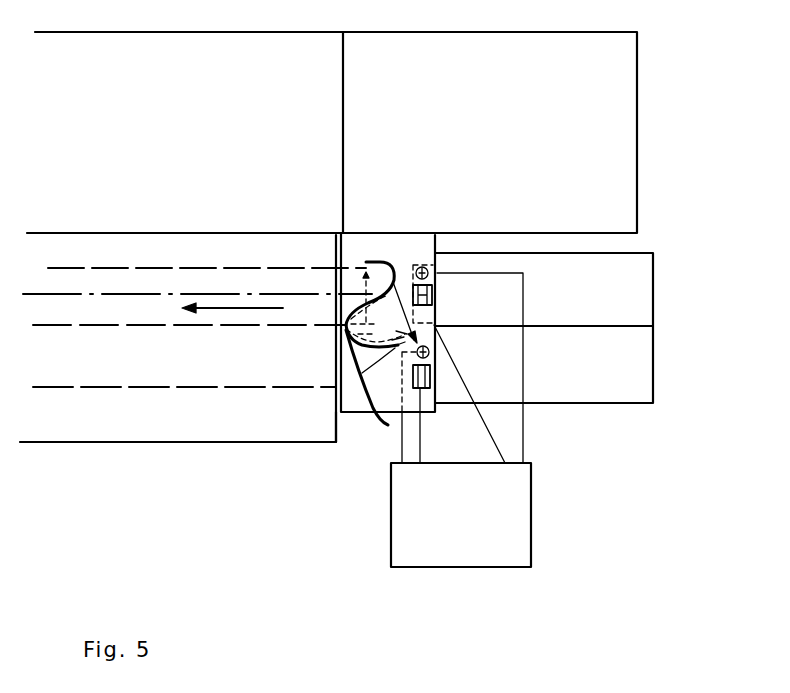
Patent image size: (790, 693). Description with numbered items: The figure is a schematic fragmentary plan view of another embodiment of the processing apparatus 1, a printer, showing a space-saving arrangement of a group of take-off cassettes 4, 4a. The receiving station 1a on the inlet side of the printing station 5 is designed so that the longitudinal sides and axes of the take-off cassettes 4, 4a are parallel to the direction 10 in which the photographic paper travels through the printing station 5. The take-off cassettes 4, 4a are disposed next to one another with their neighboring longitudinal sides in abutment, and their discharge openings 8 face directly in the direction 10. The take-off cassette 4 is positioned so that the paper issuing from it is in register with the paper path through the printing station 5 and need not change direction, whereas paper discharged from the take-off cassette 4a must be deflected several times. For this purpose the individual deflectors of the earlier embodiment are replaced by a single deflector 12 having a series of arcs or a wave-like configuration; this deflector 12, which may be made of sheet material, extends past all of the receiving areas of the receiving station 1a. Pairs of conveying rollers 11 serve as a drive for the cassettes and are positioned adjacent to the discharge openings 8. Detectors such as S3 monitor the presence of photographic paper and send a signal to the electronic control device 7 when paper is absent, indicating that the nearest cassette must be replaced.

The apparatus 1 is at (263, 442).
The receiving station 1a is at (340, 414).
The take-off cassette 4 is at (650, 309).
The take-off cassette 4a is at (637, 340).
The printing station 5 is at (147, 358).
The electronic control device 7 is at (518, 557).
The discharge opening 8 is at (437, 234).
The direction 10 is at (270, 308).
The conveying rollers 11 is at (437, 294).
The deflector 12 is at (343, 372).
The sensors S3 is at (422, 266).